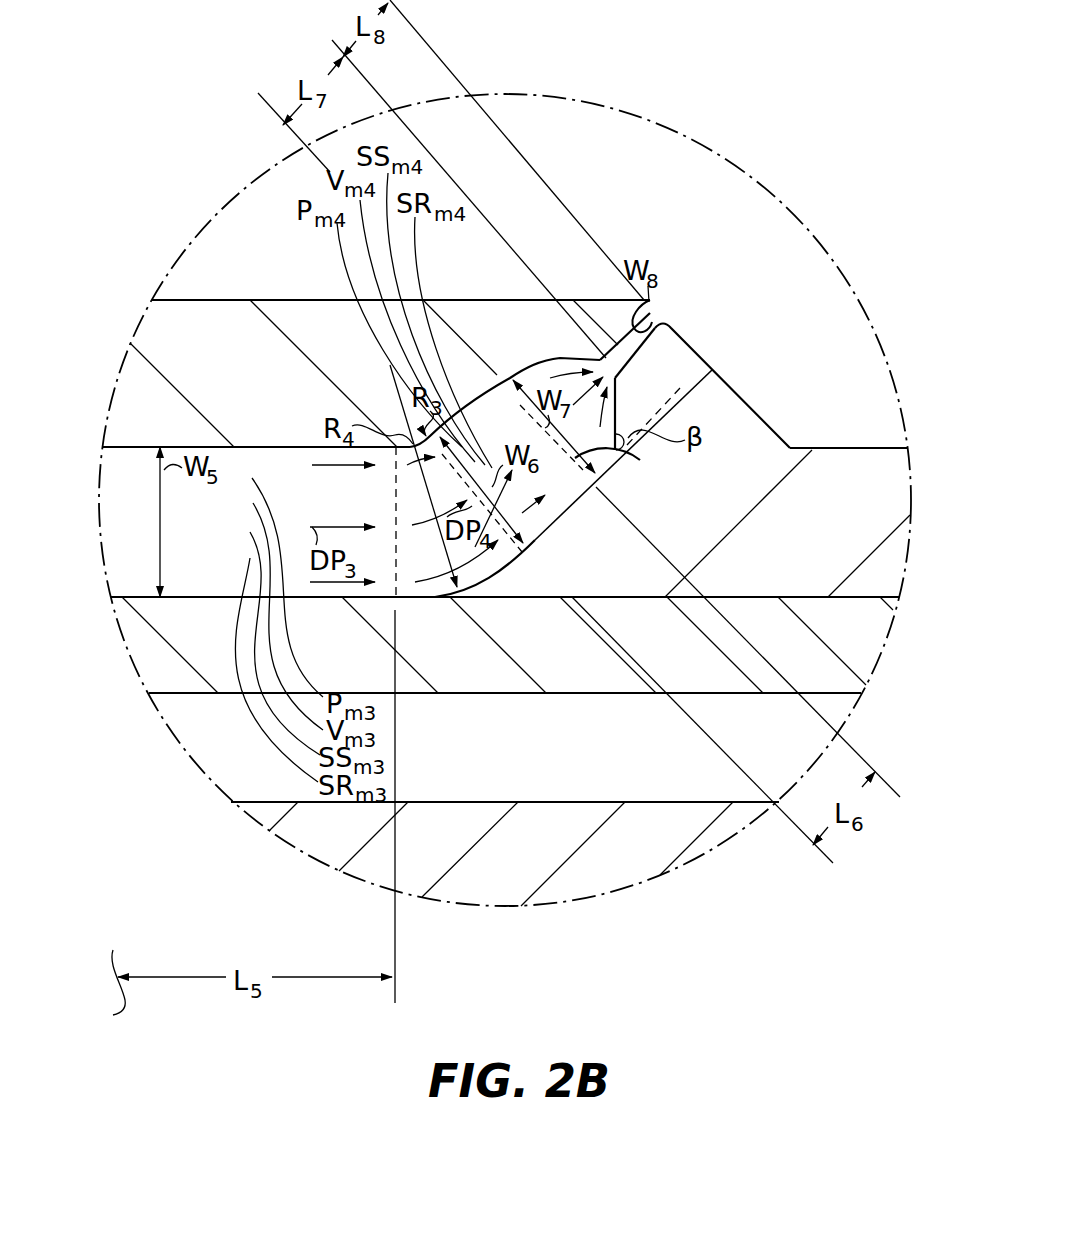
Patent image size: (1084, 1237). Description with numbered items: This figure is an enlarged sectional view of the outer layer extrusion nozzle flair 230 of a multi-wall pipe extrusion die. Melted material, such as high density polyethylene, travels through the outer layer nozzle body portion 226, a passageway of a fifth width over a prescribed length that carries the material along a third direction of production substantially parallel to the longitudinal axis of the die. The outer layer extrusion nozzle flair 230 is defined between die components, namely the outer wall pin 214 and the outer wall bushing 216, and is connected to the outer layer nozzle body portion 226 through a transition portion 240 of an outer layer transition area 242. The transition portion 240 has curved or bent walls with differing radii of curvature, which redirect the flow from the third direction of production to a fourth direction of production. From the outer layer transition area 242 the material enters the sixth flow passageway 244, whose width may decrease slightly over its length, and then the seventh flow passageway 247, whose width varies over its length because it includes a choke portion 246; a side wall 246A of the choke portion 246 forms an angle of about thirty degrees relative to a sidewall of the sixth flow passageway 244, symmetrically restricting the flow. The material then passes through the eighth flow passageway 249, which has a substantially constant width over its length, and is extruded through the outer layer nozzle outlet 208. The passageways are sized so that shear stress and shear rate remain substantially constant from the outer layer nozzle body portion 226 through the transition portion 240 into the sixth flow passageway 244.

The outer layer nozzle outlet 208 is at (665, 318).
The outer wall pin 214 is at (713, 417).
The outer wall bushing 216 is at (272, 315).
The outer layer nozzle body portion 226 is at (122, 573).
The outer layer extrusion nozzle flair 230 is at (522, 513).
The transition portion 240 is at (423, 563).
The outer layer transition area 242 is at (420, 490).
The sixth flow passageway 244 is at (488, 408).
The choke portion 246 is at (576, 360).
The side wall 246A is at (668, 377).
The seventh flow passageway 247 is at (640, 460).
The eighth flow passageway 249 is at (647, 300).